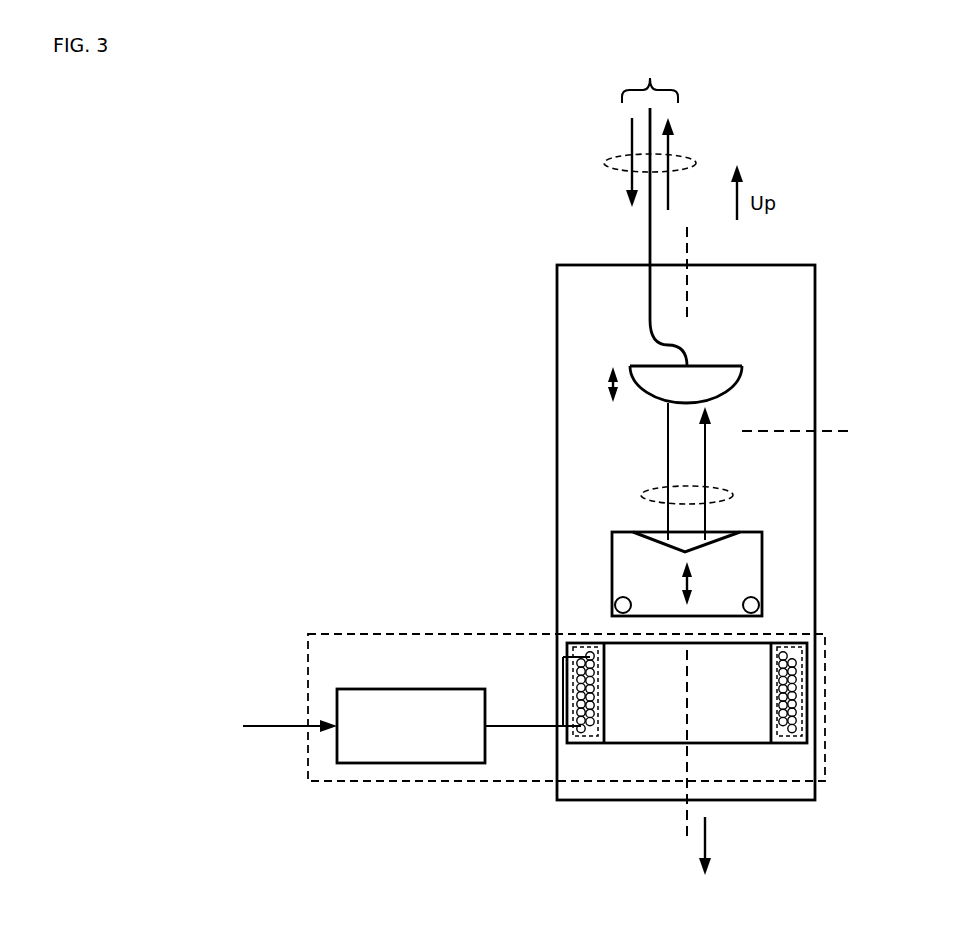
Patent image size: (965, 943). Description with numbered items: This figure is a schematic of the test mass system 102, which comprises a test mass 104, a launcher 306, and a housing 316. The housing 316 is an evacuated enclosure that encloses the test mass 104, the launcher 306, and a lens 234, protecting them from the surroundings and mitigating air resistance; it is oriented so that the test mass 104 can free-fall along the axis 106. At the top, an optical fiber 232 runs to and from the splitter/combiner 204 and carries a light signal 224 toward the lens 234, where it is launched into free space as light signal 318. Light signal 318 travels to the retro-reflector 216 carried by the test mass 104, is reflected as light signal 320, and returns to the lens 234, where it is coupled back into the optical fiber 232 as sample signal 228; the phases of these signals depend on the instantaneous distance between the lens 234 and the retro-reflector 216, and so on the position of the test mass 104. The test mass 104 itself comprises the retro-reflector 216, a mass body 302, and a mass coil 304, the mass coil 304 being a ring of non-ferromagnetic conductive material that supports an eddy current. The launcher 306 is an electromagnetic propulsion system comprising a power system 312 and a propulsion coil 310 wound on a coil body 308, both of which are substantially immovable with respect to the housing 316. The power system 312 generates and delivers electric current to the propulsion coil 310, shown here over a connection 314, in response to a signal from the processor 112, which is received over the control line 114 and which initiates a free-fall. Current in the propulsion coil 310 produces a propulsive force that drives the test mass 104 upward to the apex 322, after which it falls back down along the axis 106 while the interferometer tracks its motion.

The test mass system 102 is at (353, 174).
The test mass 104 is at (707, 544).
The axis 106 is at (685, 818).
The processor 112 is at (145, 725).
The control line 114 is at (282, 725).
The splitter/combiner 204 is at (548, 73).
The retro-reflector 216 is at (640, 494).
The light signal 224 is at (608, 162).
The sample signal 228 is at (686, 164).
The optical fiber 232 is at (650, 227).
The lens 234 is at (710, 366).
The mass body 302 is at (751, 585).
The mass coil 304 is at (759, 605).
The launcher 306 is at (372, 781).
The coil body 308 is at (755, 731).
The propulsion coil 310 is at (583, 737).
The power system 312 is at (410, 689).
The power line 314 is at (548, 726).
The housing 316 is at (816, 547).
The light signal 318 is at (647, 471).
The light signal 320 is at (722, 473).
The apex 322 is at (833, 431).